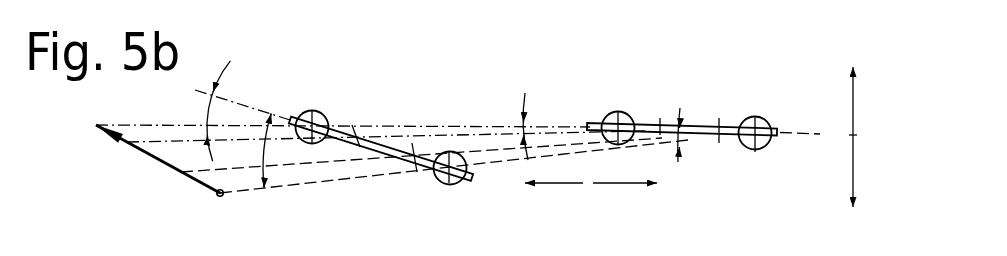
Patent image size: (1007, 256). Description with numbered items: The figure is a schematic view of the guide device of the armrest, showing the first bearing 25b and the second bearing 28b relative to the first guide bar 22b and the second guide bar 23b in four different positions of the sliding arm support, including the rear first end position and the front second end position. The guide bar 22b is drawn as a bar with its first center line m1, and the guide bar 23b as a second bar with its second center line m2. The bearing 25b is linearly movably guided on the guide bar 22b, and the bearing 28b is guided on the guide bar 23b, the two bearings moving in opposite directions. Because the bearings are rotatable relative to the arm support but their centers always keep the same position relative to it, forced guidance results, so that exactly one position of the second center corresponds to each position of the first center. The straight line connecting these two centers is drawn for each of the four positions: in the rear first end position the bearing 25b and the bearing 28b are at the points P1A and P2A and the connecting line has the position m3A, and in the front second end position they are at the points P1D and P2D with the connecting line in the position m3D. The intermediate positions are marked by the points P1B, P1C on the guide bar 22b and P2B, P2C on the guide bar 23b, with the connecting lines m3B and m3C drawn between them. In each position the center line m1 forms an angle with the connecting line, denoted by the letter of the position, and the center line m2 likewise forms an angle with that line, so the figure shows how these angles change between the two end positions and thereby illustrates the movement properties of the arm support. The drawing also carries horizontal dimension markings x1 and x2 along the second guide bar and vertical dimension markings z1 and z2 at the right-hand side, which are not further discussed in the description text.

The first guide bar 22b is at (387, 157).
The first bearing 25b is at (462, 185).
The second guide bar 23b is at (693, 137).
The second bearing 28b is at (760, 152).
The first center line m1 is at (267, 113).
The second center line m2 is at (568, 123).
The straight line m3 in position A m3A is at (257, 188).
The straight line m3 in position B m3B is at (215, 173).
The straight line m3 in position C m3C is at (173, 143).
The straight line m3 in position D m3D is at (127, 141).
The center of bearing 25b in position A P1A is at (455, 153).
The center of bearing 25b in position B P1B is at (415, 150).
The center of bearing 25b in position C P1C is at (357, 128).
The center of bearing 25b in position D P1D is at (305, 110).
The center of bearing 28b in position A P2A is at (760, 117).
The center of bearing 28b in position B P2B is at (723, 123).
The center of bearing 28b in position C P2C is at (660, 120).
The center of bearing 28b in position D P2D is at (618, 117).
The distance x1 is at (554, 175).
The distance x2 is at (625, 175).
The height z1 is at (862, 101).
The height z2 is at (864, 171).